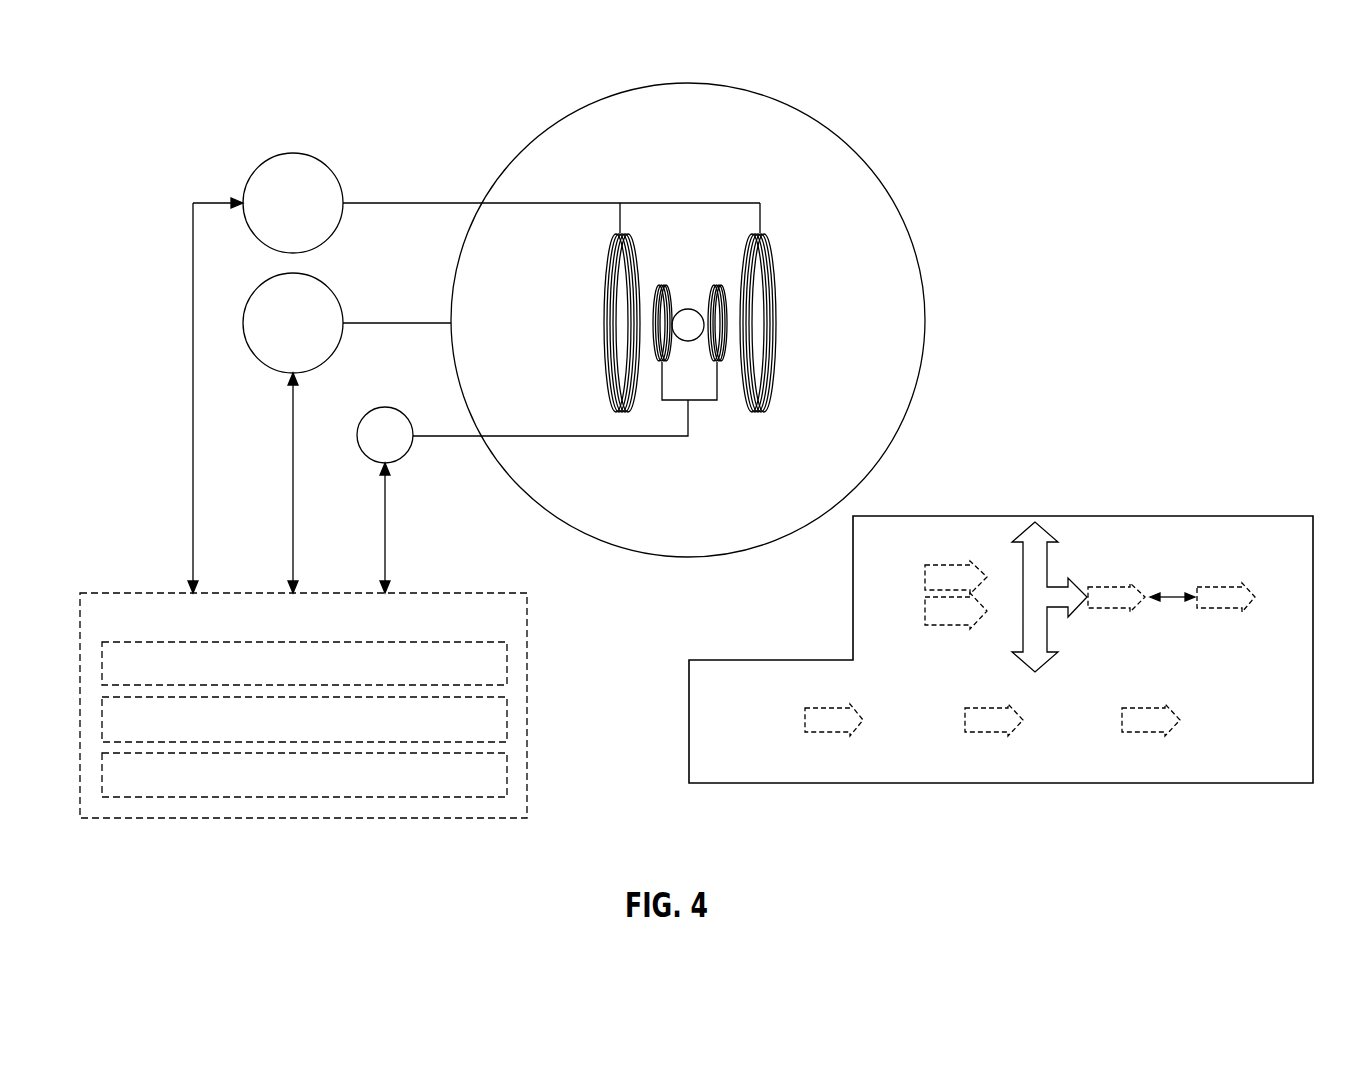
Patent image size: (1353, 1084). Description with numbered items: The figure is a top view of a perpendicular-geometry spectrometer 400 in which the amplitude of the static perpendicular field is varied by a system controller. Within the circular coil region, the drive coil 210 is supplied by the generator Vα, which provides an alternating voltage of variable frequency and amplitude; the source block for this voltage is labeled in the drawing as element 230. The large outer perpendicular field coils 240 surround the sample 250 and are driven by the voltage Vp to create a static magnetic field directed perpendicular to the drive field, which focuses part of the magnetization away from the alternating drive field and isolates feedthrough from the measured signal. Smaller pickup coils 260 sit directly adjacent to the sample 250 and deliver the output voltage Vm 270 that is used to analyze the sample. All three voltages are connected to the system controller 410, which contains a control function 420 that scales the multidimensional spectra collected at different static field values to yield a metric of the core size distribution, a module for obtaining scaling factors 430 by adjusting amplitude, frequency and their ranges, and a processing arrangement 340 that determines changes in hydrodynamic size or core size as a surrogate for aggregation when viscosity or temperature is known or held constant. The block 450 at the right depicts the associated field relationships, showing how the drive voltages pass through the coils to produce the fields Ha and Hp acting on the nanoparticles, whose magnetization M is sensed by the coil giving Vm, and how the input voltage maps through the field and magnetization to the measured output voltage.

The drive coil 210 is at (815, 115).
The spectrometer 400 is at (930, 184).
The alternating field voltage source Va(f,A) 230 is at (321, 281).
The output voltage Vm 270 is at (383, 407).
The perpendicular field coils 240 is at (627, 324).
The sample 250 is at (689, 309).
The pickup coils 260 is at (654, 343).
The system controller 410 is at (462, 593).
The control function 420 is at (507, 665).
The scaling factors 430 is at (507, 720).
The processing arrangement 340 is at (507, 775).
The block 450 is at (1230, 511).